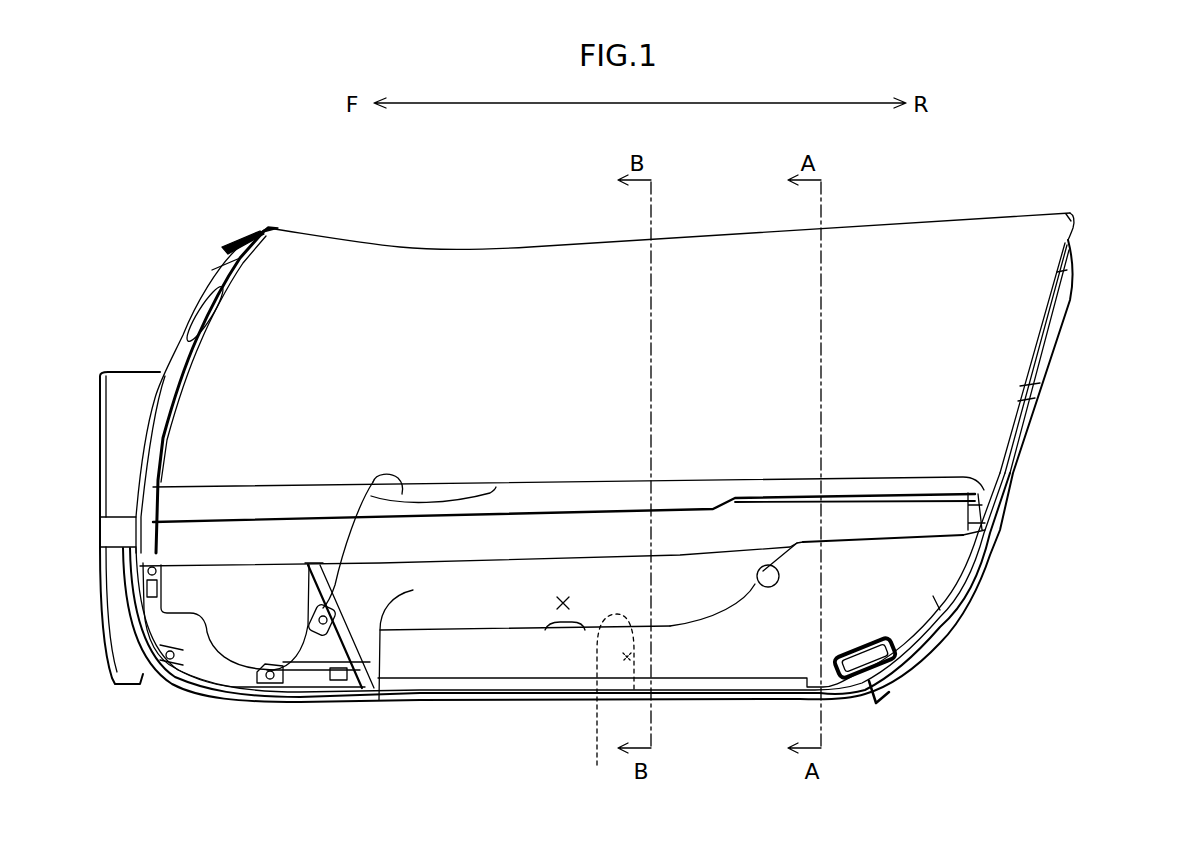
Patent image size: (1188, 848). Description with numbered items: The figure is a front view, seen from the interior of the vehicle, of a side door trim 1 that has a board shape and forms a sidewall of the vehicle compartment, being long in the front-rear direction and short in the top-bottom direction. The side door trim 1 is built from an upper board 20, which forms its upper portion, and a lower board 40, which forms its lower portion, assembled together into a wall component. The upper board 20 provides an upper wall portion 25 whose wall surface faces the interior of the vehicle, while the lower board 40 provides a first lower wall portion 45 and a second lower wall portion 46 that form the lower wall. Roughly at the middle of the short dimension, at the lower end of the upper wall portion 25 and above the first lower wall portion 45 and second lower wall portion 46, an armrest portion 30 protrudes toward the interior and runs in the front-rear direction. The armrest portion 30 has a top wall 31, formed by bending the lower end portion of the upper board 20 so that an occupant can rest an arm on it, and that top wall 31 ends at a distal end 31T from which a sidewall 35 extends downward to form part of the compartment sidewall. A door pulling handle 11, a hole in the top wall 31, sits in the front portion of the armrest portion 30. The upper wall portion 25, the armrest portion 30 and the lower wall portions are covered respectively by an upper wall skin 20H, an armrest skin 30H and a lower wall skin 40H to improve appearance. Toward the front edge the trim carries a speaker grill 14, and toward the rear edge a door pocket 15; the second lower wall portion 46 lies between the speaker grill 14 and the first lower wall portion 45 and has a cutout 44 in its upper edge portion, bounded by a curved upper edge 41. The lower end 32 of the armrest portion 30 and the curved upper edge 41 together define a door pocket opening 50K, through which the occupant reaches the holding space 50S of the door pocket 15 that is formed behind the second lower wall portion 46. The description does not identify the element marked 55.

The side door trim 1 is at (1038, 199).
The door pulling handle 11 is at (320, 636).
The speaker grill 14 is at (198, 652).
The door pocket 15 is at (494, 604).
The upper board 20 is at (1015, 312).
The upper wall skin 20H is at (1074, 228).
The upper wall portion 25 is at (513, 347).
The armrest portion 30 is at (980, 524).
The armrest skin 30H is at (887, 525).
The top wall 31 is at (968, 484).
The distal end 31T is at (980, 505).
The lower end 32 is at (782, 540).
The sidewall 35 is at (927, 525).
The lower board 40 is at (903, 612).
The lower wall skin 40H is at (898, 632).
The curved upper edge 41 is at (781, 588).
The cutout 44 is at (697, 613).
The first lower wall portion 45 is at (860, 620).
The second lower wall portion 46 is at (456, 655).
The door pocket opening 50K is at (563, 609).
The holding space 50S is at (608, 704).
The pocket wall 55 is at (379, 700).